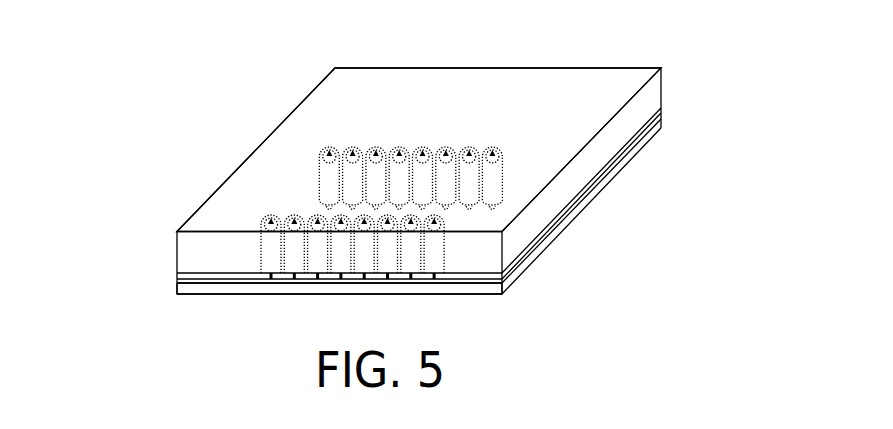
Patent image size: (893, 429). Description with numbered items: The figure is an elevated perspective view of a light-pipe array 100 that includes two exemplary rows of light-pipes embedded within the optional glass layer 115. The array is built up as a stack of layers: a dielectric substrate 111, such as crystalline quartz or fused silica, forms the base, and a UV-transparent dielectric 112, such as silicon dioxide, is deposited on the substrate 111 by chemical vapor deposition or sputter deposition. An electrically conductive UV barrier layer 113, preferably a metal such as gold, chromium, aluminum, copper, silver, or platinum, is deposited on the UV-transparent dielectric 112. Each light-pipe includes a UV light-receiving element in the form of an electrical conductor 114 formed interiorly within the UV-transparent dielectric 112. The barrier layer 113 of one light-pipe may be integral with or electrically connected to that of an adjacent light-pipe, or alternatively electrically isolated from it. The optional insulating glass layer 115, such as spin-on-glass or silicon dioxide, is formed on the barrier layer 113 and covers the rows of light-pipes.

The light-pipe array 100 is at (745, 47).
The dielectric substrate 111 is at (195, 287).
The UV-transparent dielectric 112 is at (192, 276).
The UV barrier layer 113 is at (322, 177).
The electrical conductor 114 is at (490, 210).
The glass layer 115 is at (613, 135).